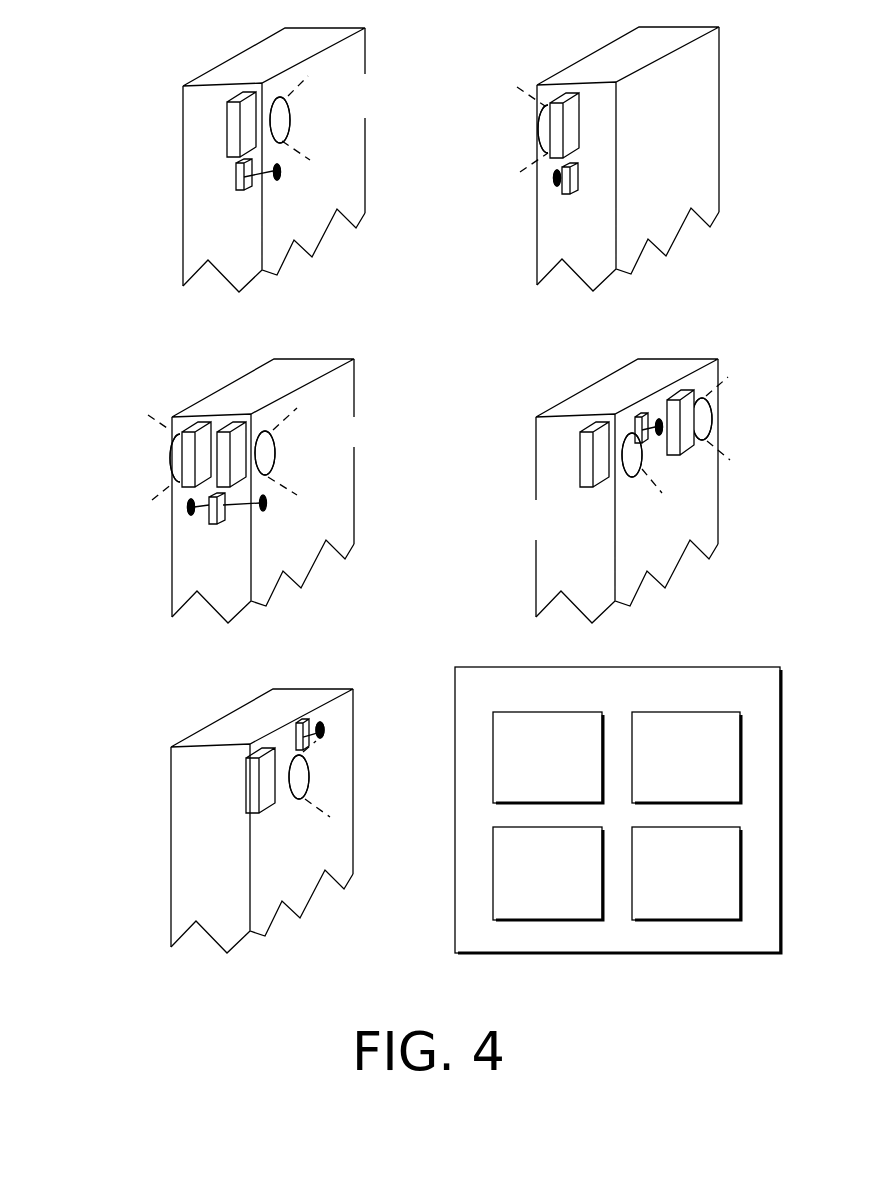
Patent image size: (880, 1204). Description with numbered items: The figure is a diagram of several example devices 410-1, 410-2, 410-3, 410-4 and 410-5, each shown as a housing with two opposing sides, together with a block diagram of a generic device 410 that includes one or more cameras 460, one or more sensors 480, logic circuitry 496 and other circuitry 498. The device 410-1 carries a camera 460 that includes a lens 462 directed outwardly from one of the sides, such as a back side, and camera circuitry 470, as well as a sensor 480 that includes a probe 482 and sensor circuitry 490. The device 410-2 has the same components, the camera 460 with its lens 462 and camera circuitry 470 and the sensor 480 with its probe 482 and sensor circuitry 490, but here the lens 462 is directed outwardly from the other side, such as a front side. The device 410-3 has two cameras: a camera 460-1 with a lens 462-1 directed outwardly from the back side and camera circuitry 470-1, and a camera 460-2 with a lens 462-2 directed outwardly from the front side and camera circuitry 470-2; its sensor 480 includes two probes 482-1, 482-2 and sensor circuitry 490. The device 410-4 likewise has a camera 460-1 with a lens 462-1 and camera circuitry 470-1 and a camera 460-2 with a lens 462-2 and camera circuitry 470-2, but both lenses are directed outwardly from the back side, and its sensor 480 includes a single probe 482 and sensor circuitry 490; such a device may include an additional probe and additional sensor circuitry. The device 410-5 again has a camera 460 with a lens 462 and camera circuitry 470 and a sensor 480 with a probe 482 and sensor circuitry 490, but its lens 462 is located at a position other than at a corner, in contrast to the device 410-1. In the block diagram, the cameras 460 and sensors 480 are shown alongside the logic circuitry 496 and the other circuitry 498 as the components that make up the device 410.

The device 410 is at (635, 700).
The device 410-1 is at (203, 33).
The device 410-2 is at (548, 38).
The device 410-3 is at (187, 372).
The device 410-4 is at (540, 375).
The device 410-5 is at (188, 700).
The camera 460 is at (310, 107).
The camera 460-1 is at (302, 443).
The camera 460-2 is at (137, 418).
The lens 462 is at (282, 125).
The lens 462-1 is at (275, 455).
The lens 462-2 is at (175, 445).
The camera circuitry 470 is at (227, 123).
The camera circuitry 470-1 is at (232, 428).
The camera circuitry 470-2 is at (187, 452).
The sensor 480 is at (283, 182).
The probe 482 is at (273, 181).
The probe 482-1 is at (267, 508).
The probe 482-2 is at (187, 510).
The sensor circuitry 490 is at (238, 181).
The logic circuitry 496 is at (531, 906).
The other circuitry 498 is at (670, 906).